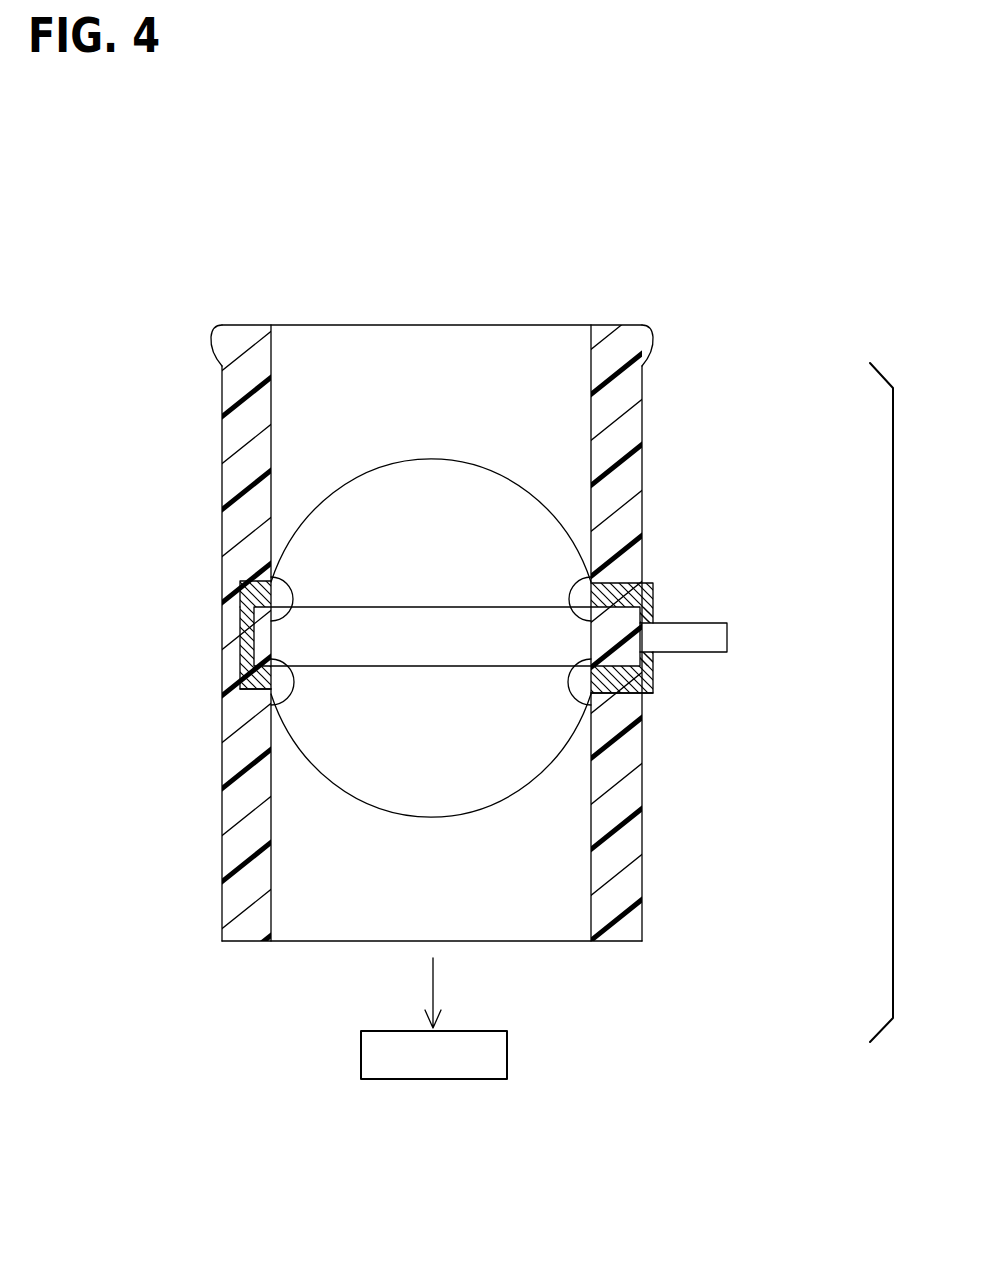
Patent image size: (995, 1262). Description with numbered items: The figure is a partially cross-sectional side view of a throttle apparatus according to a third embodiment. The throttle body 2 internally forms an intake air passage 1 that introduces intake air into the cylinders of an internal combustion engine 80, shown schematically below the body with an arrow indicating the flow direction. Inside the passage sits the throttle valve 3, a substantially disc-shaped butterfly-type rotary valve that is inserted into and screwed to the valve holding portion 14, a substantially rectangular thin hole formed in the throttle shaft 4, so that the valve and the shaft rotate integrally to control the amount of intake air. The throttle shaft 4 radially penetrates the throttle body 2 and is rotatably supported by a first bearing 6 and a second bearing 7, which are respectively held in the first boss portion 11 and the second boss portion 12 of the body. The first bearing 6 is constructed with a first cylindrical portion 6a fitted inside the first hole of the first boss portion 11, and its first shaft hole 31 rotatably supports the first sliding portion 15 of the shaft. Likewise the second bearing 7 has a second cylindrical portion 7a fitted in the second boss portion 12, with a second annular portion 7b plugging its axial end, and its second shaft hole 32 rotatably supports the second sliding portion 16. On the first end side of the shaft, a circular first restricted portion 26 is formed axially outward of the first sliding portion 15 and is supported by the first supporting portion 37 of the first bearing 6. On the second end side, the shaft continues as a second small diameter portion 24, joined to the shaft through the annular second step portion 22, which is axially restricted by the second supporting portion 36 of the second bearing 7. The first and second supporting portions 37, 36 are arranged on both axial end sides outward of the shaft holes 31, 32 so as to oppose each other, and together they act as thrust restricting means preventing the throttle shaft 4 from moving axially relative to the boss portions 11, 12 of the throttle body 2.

The intake air passage 1 is at (365, 355).
The throttle body 2 is at (440, 611).
The throttle valve 3 is at (418, 478).
The throttle shaft 4 is at (447, 462).
The valve holding portion 14 is at (456, 612).
The first bearing 6 is at (183, 673).
The first cylindrical portion 6a is at (268, 688).
The second bearing 7 is at (701, 660).
The second cylindrical portion 7a is at (635, 704).
The second annular portion 7b is at (648, 658).
The first boss portion 11 is at (243, 562).
The second boss portion 12 is at (630, 558).
The first sliding portion 15 is at (247, 676).
The second sliding portion 16 is at (652, 674).
The second step portion 22 is at (653, 605).
The second small diameter portion 24 is at (710, 636).
The first restricted portion 26 is at (247, 608).
The first shaft hole 31 is at (280, 672).
The second shaft hole 32 is at (590, 712).
The second supporting portion 36 is at (603, 578).
The first supporting portion 37 is at (283, 592).
The internal combustion engine 80 is at (507, 1053).